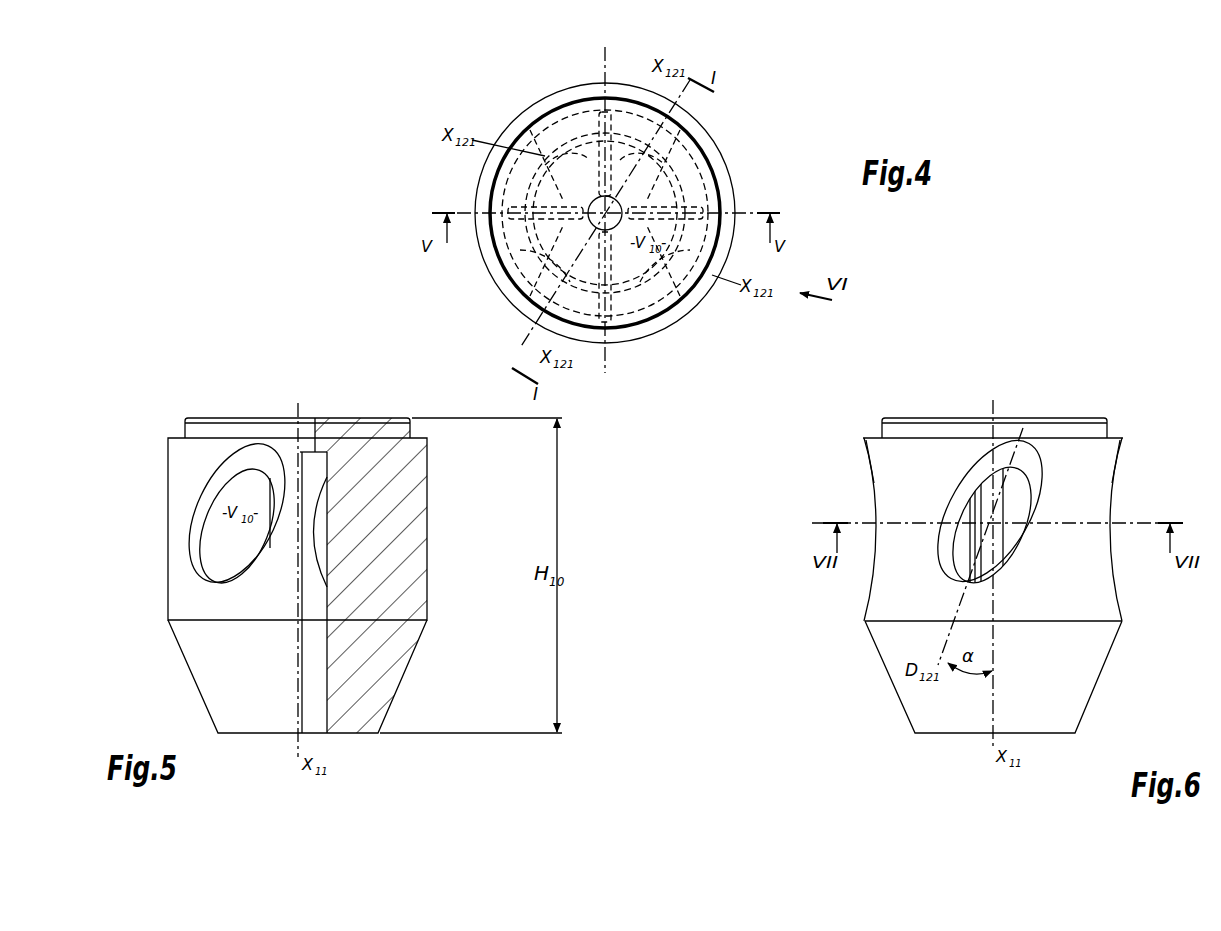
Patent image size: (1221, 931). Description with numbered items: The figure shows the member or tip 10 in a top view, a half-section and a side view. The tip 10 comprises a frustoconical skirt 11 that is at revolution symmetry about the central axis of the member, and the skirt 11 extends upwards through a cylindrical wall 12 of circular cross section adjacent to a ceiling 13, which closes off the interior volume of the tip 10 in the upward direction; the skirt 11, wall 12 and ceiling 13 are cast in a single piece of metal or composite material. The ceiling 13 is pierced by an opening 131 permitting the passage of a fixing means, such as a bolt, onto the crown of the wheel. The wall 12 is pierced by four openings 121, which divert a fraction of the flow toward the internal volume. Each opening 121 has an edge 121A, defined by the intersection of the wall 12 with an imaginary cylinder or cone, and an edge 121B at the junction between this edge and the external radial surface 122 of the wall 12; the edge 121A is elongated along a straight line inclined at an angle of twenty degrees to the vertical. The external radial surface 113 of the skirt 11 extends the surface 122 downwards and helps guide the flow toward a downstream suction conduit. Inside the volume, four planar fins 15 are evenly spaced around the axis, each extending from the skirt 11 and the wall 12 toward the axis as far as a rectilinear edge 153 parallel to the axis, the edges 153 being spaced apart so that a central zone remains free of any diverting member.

In FIG. 4, the tip 10 is at (746, 124).
In FIG. 5, the tip 10 is at (147, 389).
In FIG. 6, the tip 10 is at (1124, 380).
In FIG. 4, the skirt 11 is at (692, 308).
In FIG. 5, the skirt 11 is at (297, 676).
In FIG. 6, the skirt 11 is at (1055, 700).
In FIG. 5, the external radial surface of the skirt 113 is at (255, 694).
In FIG. 6, the external radial surface of the skirt 113 is at (917, 701).
In FIG. 4, the cylindrical wall 12 is at (513, 128).
In FIG. 5, the cylindrical wall 12 is at (297, 529).
In FIG. 6, the cylindrical wall 12 is at (1088, 609).
In FIG. 5, the opening 121 is at (231, 558).
In FIG. 6, the opening 121 is at (1019, 552).
In FIG. 5, the edge of an opening 121A is at (230, 480).
In FIG. 6, the edge of an opening 121A is at (984, 458).
In FIG. 5, the edge of the junction 121B is at (193, 538).
In FIG. 6, the edge of the junction 121B is at (1036, 472).
In FIG. 5, the external radial surface of the wall 122 is at (186, 476).
In FIG. 6, the external radial surface of the wall 122 is at (886, 603).
In FIG. 4, the ceiling 13 is at (645, 187).
In FIG. 5, the ceiling 13 is at (372, 428).
In FIG. 6, the ceiling 13 is at (937, 428).
In FIG. 4, the opening in the ceiling 131 is at (597, 205).
In FIG. 5, the opening in the ceiling 131 is at (307, 426).
In FIG. 4, the fin 15 is at (631, 322).
In FIG. 5, the fin 15 is at (392, 575).
In FIG. 4, the edge of a fin 153 is at (592, 232).